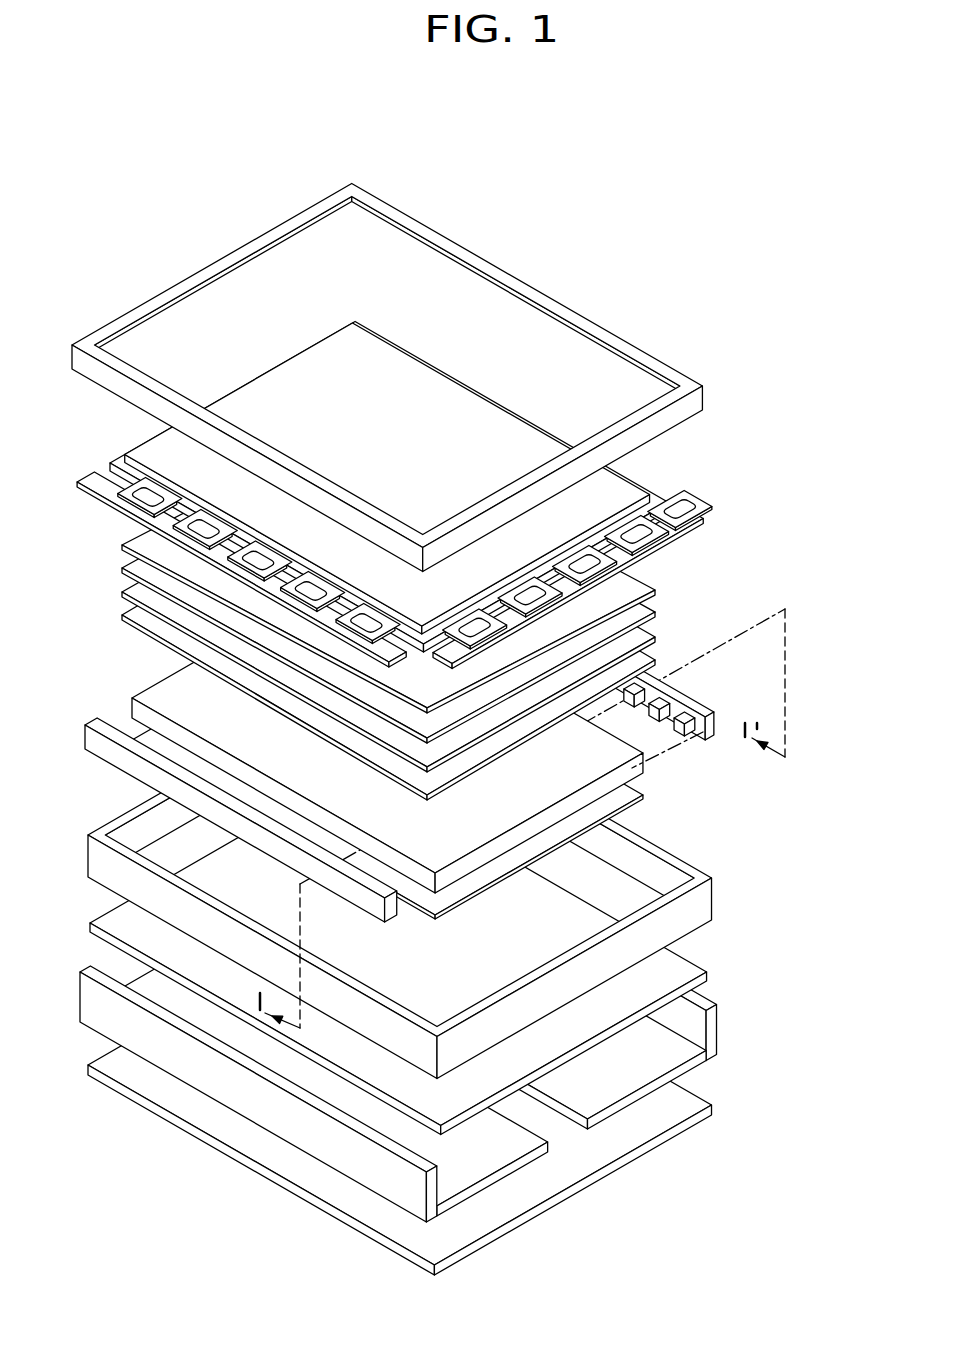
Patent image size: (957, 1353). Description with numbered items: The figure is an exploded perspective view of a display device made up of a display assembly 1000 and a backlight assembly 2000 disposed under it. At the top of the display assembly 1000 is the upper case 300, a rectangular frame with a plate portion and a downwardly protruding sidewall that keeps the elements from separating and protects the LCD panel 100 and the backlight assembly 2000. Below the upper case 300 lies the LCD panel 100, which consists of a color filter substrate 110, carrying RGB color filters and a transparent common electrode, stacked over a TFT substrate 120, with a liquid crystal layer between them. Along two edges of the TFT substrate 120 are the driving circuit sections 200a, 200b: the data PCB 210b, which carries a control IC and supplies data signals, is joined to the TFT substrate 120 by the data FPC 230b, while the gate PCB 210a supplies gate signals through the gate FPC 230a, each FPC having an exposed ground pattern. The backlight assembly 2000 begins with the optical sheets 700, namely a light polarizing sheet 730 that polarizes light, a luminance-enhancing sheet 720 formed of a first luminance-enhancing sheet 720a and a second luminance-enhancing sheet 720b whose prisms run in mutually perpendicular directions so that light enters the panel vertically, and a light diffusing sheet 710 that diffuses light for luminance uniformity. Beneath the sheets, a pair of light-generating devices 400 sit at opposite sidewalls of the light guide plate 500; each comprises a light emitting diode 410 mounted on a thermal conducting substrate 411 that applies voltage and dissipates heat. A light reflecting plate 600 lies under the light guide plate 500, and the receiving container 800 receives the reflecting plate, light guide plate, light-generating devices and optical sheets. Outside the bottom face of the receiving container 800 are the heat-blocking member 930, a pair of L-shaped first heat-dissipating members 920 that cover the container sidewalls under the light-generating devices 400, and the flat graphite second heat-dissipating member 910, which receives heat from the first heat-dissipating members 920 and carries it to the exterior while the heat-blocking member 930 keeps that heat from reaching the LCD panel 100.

The display assembly 1000 is at (477, 492).
The upper case 300 is at (703, 400).
The LCD panel 100 is at (459, 487).
The color filter substrate 110 is at (627, 472).
The thin film transistor substrate 120 is at (660, 501).
The driving circuit section 200a is at (625, 578).
The gate PCB 210a is at (700, 518).
The gate FPC 230a is at (672, 512).
The driving circuit section 200b is at (241, 440).
The data PCB 210b is at (92, 476).
The data FPC 230b is at (138, 478).
The optical sheets 700 is at (466, 613).
The light polarizing sheet 730 is at (653, 588).
The luminance-enhancing sheet 720 is at (446, 607).
The first luminance-enhancing sheet 720a is at (655, 636).
The second luminance-enhancing sheet 720b is at (655, 612).
The light diffusing sheet 710 is at (655, 659).
The backlight assembly 2000 is at (479, 925).
The light-generating device 400 is at (443, 782).
The light emitting diode 410 is at (706, 742).
The thermal conducting substrate 411 is at (690, 740).
The light guide plate 500 is at (636, 774).
The light reflecting plate 600 is at (638, 800).
The receiving container 800 is at (702, 900).
The heat-blocking member 930 is at (705, 970).
The first heat-dissipating member 920 is at (718, 1030).
The second heat-dissipating member 910 is at (709, 1106).